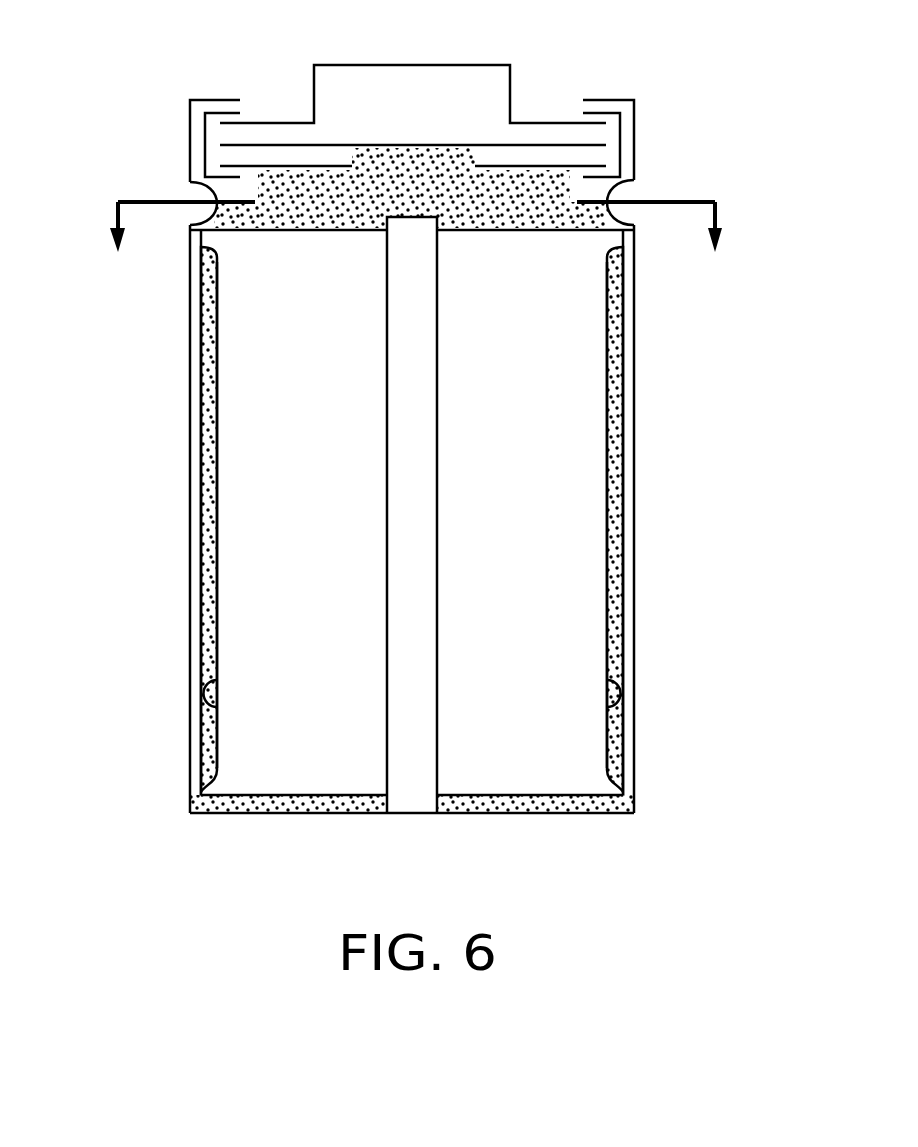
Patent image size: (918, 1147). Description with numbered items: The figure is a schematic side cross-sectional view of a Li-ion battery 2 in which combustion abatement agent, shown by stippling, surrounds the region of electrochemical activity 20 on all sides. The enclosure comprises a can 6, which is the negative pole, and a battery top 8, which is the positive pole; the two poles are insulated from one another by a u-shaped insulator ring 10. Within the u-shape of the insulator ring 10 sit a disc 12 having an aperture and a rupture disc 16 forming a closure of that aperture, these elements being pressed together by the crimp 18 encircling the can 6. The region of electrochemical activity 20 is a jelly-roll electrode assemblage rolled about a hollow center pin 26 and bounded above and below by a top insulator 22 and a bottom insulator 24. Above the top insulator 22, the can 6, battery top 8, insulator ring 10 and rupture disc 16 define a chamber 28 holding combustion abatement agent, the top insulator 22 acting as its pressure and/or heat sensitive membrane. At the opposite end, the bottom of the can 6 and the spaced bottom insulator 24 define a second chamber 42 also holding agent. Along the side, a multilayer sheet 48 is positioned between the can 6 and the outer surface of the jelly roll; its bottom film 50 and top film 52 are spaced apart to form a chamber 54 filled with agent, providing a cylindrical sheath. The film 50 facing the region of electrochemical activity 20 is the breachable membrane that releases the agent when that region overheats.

The battery 2 is at (414, 253).
The can 6 is at (636, 614).
The battery top 8 is at (502, 65).
The u-shaped insulator ring 10 is at (622, 135).
The disc 12 is at (249, 166).
The rupture disc 16 is at (275, 145).
The crimp 18 is at (207, 186).
The region of electrochemical activity 20 is at (309, 543).
The top insulator 22 is at (243, 233).
The bottom insulator 24 is at (580, 790).
The center pin 26 is at (428, 462).
The chamber 28 is at (528, 205).
The second chamber 42 is at (612, 803).
The multilayer sheet 48 is at (222, 442).
The bottom film 50 is at (205, 707).
The top film 52 is at (608, 582).
The chamber 54 is at (615, 500).